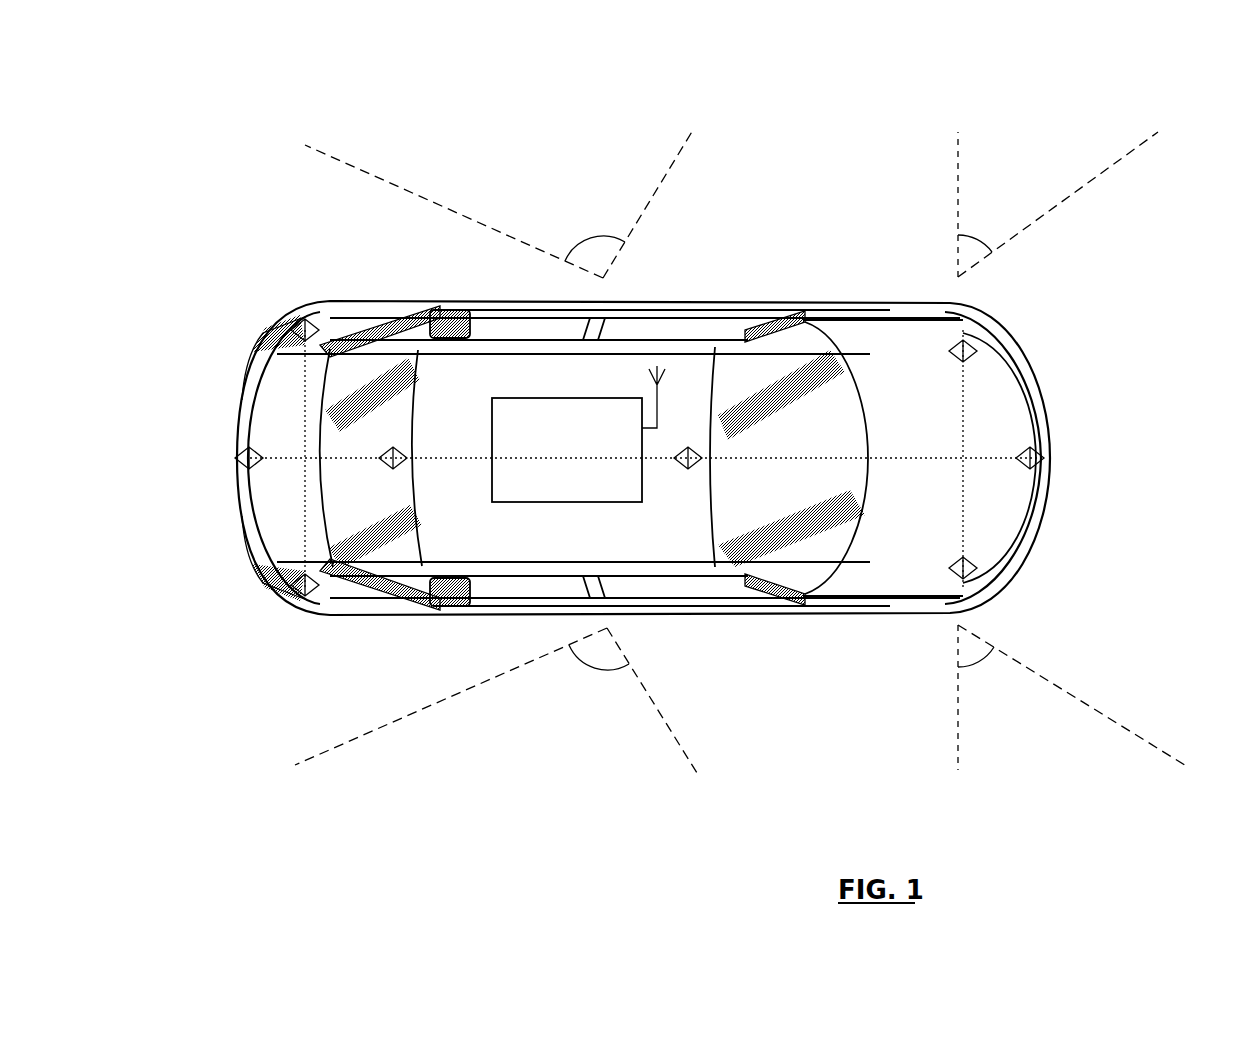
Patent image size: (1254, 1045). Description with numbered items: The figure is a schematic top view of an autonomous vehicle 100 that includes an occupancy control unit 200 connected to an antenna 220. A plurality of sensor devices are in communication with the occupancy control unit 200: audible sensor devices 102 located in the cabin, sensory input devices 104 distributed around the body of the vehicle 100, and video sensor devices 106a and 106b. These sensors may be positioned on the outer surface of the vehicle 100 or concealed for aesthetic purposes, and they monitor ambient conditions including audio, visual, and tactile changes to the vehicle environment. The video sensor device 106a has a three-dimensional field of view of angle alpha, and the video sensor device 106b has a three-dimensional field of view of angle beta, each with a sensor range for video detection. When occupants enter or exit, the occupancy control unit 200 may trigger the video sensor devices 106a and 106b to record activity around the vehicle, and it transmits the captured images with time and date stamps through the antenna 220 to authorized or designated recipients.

The autonomous vehicle 100 is at (858, 305).
The audible sensor device 102 is at (402, 455).
The sensory input device 104 is at (305, 318).
The video sensor device 106a is at (496, 451).
The video sensor device 106b is at (1073, 446).
The occupancy control unit 200 is at (585, 503).
The antenna 220 is at (660, 415).